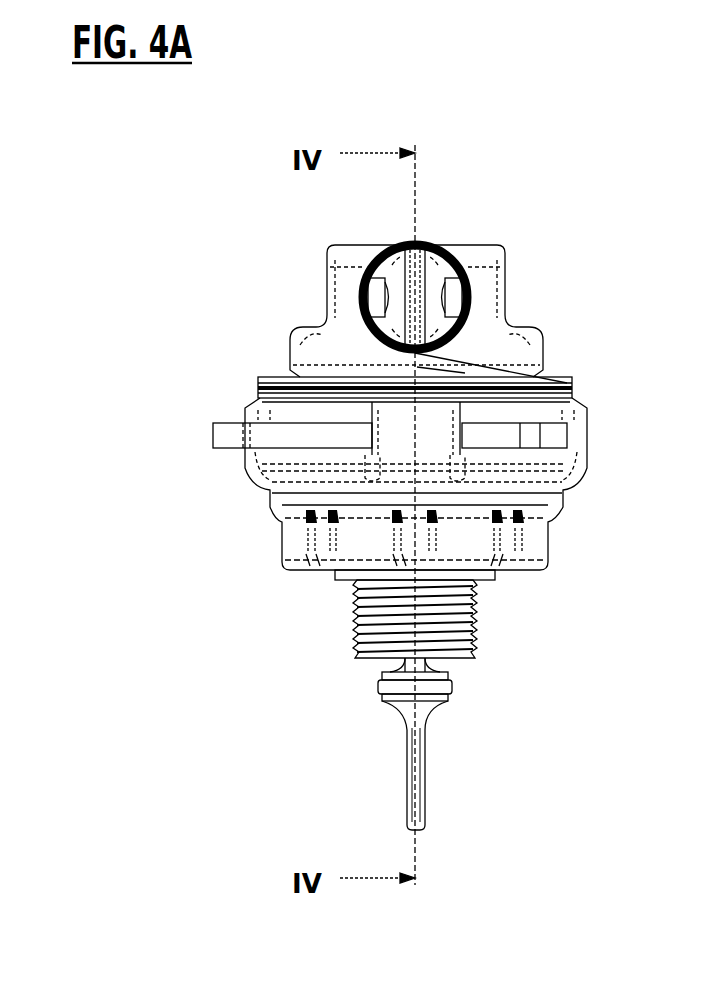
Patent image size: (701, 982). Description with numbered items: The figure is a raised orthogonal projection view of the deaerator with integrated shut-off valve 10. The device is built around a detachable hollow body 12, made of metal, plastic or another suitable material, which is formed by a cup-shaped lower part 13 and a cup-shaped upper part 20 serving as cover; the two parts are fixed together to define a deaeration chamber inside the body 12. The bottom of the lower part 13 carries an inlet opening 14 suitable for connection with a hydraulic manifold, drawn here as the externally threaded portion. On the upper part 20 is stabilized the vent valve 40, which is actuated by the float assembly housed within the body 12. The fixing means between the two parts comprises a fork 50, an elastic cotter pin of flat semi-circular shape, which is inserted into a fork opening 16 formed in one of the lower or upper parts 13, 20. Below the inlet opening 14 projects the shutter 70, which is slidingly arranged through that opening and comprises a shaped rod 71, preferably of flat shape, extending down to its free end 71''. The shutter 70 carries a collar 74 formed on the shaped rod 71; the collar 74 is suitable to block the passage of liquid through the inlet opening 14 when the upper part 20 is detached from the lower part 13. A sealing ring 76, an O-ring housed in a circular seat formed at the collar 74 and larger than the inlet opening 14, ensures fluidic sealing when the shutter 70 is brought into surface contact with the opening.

The deaerator with integrated shut-off valve 10 is at (545, 138).
The vent valve 40 is at (423, 244).
The upper part 20 is at (485, 288).
The hollow body 12 is at (262, 377).
The fork opening 16 is at (545, 438).
The fork 50 is at (227, 440).
The lower part 13 is at (547, 563).
The inlet opening 14 is at (474, 657).
The sealing ring 76 is at (453, 689).
The collar 74 is at (403, 705).
The shaped rod 71 is at (364, 776).
The shutter 70 is at (427, 762).
The free end 71'' is at (536, 853).